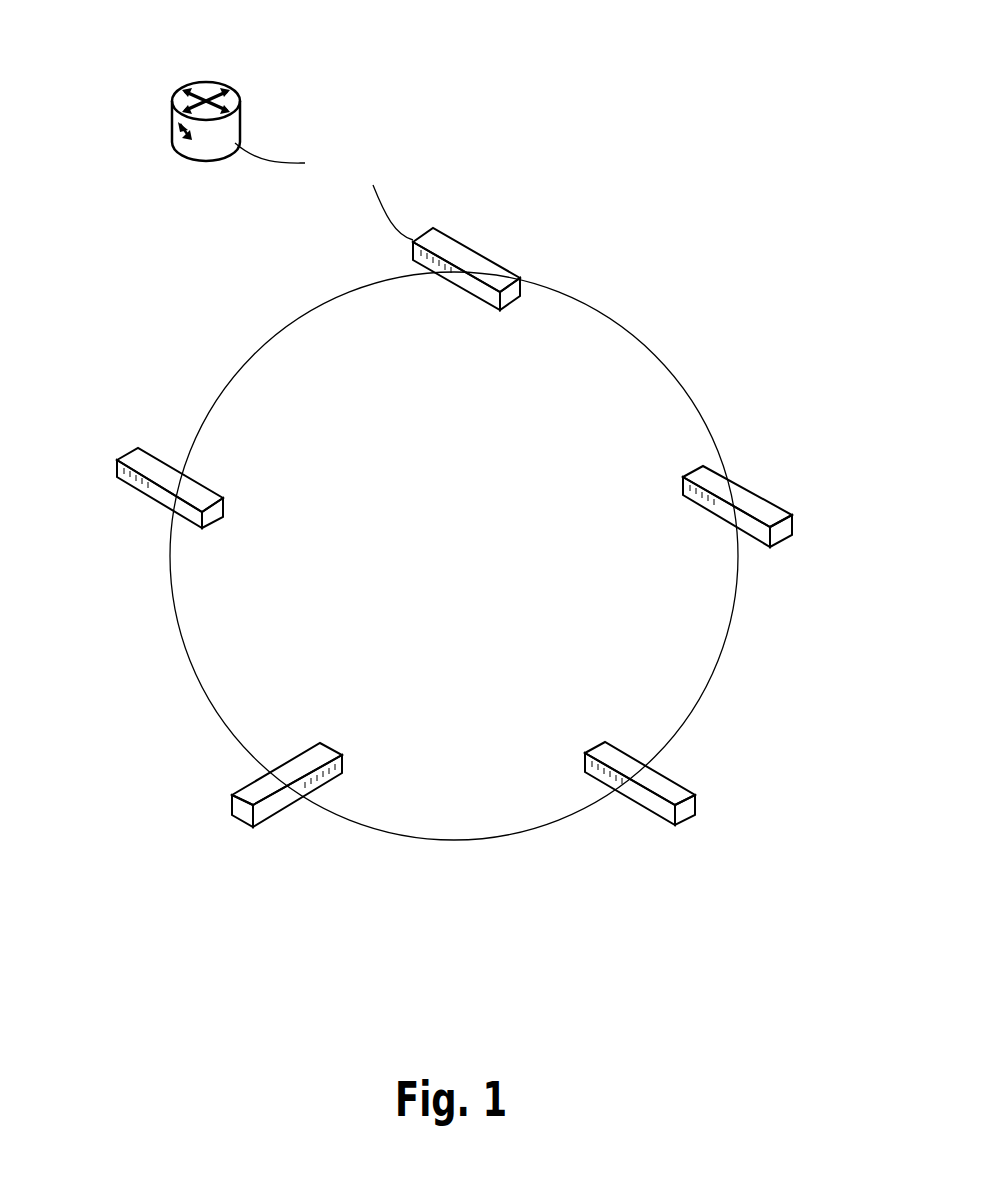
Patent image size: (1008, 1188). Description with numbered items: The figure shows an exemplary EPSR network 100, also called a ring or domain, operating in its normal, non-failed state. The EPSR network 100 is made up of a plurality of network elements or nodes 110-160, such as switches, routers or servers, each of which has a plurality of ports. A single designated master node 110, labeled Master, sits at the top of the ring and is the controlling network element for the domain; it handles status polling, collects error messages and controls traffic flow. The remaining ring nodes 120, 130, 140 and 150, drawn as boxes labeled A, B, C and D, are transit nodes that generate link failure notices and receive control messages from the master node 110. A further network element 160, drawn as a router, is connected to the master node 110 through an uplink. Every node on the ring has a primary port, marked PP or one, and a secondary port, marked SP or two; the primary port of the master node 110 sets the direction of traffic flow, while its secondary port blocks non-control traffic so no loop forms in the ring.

The EPSR network 100 is at (480, 564).
The master node 110 is at (505, 240).
The transit node 120 is at (763, 470).
The transit node 130 is at (690, 825).
The transit node 140 is at (232, 825).
The transit node 150 is at (123, 453).
The network element 160 is at (240, 97).